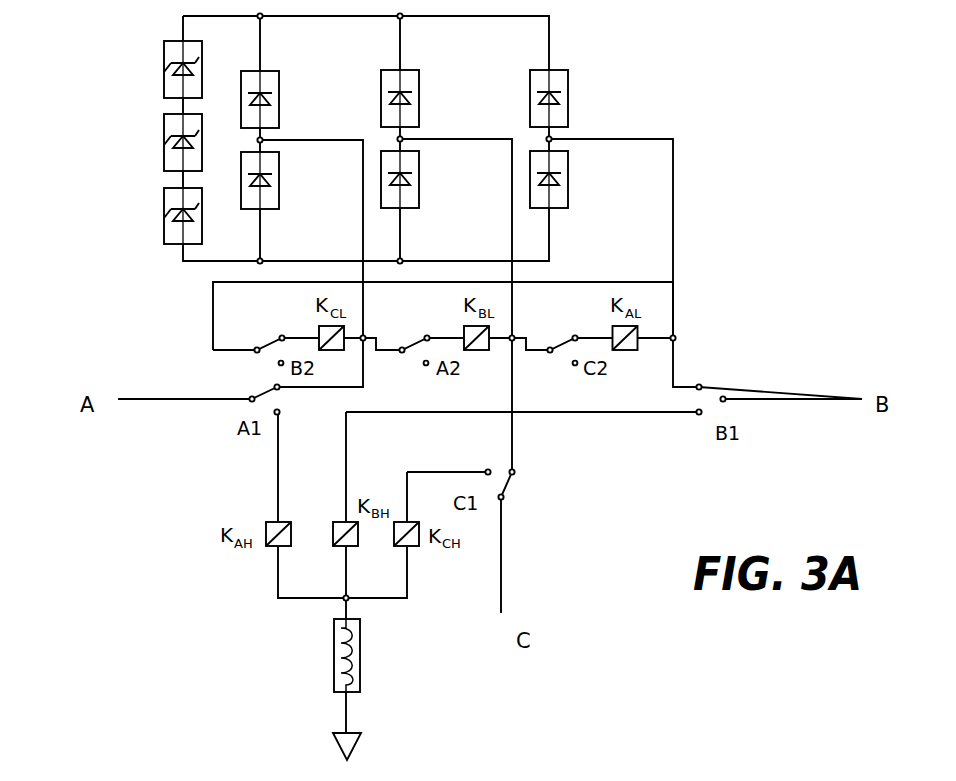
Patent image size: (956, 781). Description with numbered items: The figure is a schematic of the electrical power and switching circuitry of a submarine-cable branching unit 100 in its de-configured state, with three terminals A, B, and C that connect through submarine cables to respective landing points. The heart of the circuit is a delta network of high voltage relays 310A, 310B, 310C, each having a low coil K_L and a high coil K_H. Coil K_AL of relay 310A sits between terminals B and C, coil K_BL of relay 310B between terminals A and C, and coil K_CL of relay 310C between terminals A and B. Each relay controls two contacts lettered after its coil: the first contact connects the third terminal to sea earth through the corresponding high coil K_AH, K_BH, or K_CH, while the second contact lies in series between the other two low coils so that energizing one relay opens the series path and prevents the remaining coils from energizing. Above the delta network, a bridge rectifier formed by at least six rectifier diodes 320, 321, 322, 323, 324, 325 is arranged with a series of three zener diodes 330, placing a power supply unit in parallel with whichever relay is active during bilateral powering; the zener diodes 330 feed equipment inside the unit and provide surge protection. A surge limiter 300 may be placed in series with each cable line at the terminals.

The branching unit 100 is at (787, 93).
The surge limiter 300 is at (335, 683).
The relay 310A is at (612, 327).
The relay 310B is at (463, 327).
The relay 310C is at (319, 327).
The bridge rectifier diode 320 is at (279, 180).
The bridge rectifier diode 321 is at (279, 95).
The bridge rectifier diode 322 is at (419, 180).
The bridge rectifier diode 323 is at (419, 95).
The bridge rectifier diode 324 is at (568, 180).
The bridge rectifier diode 325 is at (568, 95).
The zener diode 330 is at (163, 70).